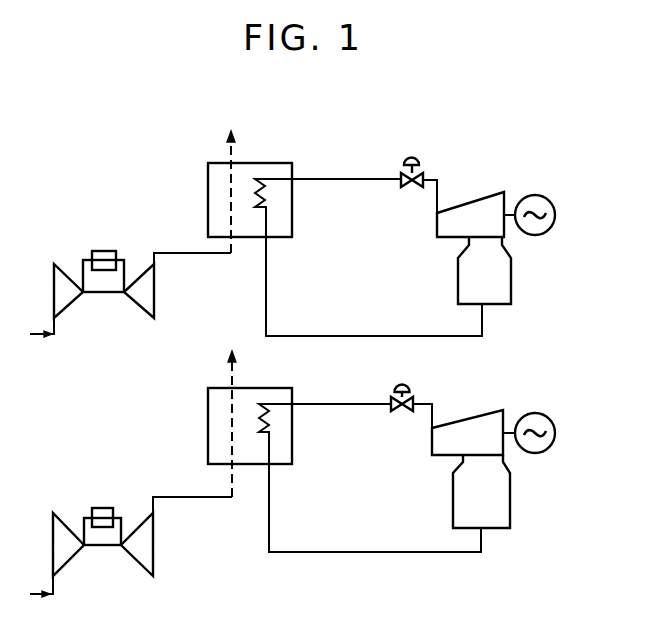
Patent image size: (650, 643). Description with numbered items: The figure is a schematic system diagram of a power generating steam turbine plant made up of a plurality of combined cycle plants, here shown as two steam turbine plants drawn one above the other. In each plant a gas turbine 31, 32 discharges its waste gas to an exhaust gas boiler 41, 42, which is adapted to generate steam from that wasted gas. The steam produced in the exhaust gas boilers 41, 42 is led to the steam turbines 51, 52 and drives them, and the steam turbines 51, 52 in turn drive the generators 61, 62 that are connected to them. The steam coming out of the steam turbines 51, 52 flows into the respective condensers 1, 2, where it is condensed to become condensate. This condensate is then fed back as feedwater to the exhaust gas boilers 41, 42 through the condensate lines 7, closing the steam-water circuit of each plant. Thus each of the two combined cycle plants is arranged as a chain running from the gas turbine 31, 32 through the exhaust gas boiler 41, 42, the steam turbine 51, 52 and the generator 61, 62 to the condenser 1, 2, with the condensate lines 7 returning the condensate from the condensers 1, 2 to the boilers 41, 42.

The condenser 1 is at (502, 288).
The condenser 2 is at (500, 503).
The condensate line 7 is at (403, 336).
The gas turbine 31 is at (104, 251).
The gas turbine 32 is at (104, 508).
The exhaust gas boiler 41 is at (275, 163).
The exhaust gas boiler 42 is at (267, 388).
The steam turbine 51 is at (483, 195).
The steam turbine 52 is at (477, 407).
The generator 61 is at (553, 202).
The generator 62 is at (553, 420).